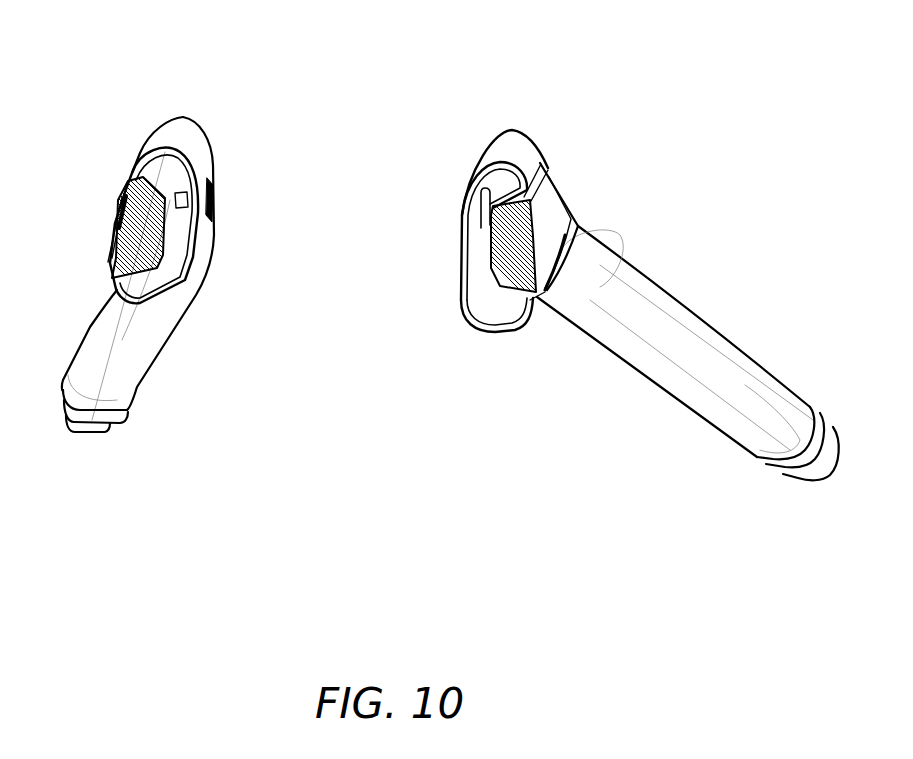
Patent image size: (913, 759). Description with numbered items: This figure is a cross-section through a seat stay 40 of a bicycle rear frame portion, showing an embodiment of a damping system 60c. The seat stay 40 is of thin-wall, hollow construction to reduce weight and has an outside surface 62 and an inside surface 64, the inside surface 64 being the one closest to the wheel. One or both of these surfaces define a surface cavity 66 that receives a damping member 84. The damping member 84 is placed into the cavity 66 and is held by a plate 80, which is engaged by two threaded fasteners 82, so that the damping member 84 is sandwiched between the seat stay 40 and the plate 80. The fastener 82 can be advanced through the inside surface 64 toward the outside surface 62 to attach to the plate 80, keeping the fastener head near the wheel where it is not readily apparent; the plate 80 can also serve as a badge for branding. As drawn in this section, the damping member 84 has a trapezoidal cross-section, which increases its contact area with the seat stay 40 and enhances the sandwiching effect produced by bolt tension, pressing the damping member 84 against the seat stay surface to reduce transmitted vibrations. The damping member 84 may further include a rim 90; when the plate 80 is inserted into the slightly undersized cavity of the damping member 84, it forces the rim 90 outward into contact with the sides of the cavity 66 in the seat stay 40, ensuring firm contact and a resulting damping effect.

The damping system 60c is at (107, 103).
The seat stay 40 is at (195, 125).
The outside surface 62 is at (90, 328).
The inside surface 64 is at (197, 260).
The surface cavity 66 is at (130, 185).
The plate 80 is at (118, 228).
The threaded fastener 82 is at (213, 202).
The damping member 84 is at (108, 272).
The rim 90 is at (125, 190).